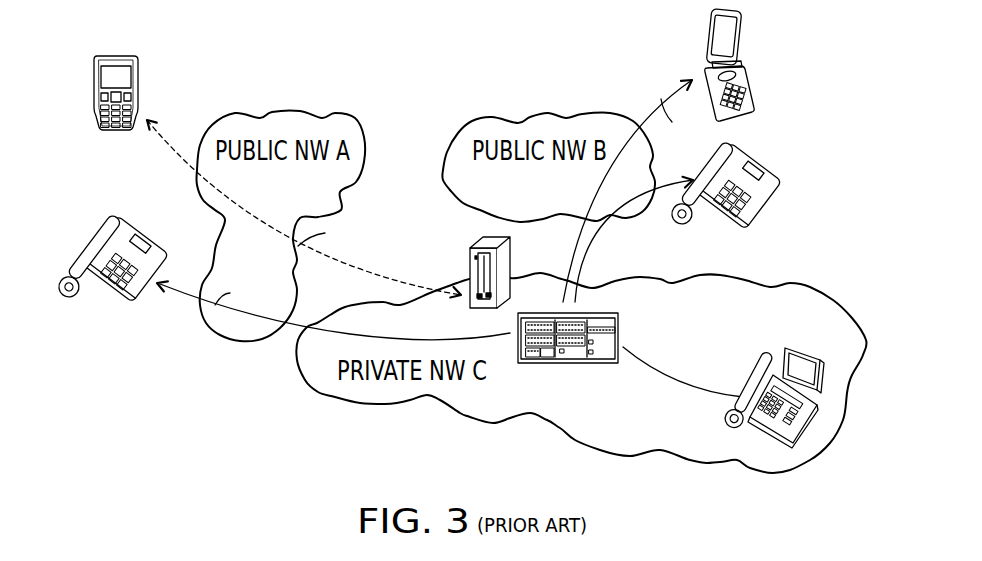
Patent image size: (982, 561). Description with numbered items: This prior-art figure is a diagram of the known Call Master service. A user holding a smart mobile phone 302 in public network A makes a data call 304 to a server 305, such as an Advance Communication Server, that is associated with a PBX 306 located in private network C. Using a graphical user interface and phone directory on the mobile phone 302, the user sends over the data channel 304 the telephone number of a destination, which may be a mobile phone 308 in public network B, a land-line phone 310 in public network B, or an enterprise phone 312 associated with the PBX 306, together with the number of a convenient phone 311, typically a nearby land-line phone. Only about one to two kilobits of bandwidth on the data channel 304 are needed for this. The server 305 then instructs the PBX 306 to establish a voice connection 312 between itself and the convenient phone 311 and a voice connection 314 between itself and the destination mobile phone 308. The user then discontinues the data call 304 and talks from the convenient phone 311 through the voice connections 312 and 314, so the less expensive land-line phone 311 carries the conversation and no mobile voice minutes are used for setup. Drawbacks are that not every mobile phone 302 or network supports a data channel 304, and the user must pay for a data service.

The mobile phone 302 is at (117, 55).
The data call 304 is at (365, 272).
The server 305 is at (510, 253).
The PBX 306 is at (567, 363).
The mobile phone 308 is at (742, 57).
The land-line phone 310 is at (770, 158).
The convenient phone 311 is at (150, 237).
The voice connection 312 is at (290, 328).
The voice connection 314 is at (662, 98).